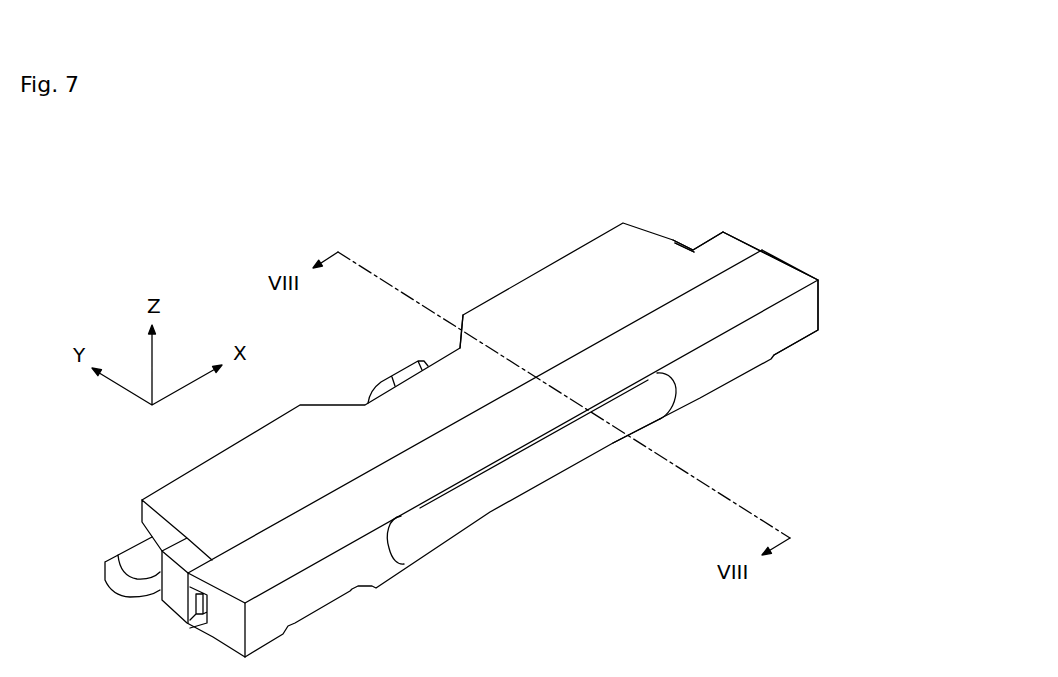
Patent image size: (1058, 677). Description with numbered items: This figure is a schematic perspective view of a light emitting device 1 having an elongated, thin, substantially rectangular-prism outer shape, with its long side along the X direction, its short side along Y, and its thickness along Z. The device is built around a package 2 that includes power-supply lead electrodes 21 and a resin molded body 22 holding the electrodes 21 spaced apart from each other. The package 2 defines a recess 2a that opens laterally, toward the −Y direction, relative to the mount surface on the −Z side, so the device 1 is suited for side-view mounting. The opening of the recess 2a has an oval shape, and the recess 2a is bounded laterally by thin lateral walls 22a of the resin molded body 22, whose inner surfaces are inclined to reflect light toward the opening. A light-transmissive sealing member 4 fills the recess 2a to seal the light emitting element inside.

The light emitting device 1 is at (760, 204).
The package 2 is at (798, 260).
The recess 2a is at (445, 525).
The light-transmissive sealing member 4 is at (508, 487).
The power-supply lead electrodes 21 is at (676, 238).
The resin molded body 22 is at (793, 327).
The lateral walls 22a is at (580, 425).